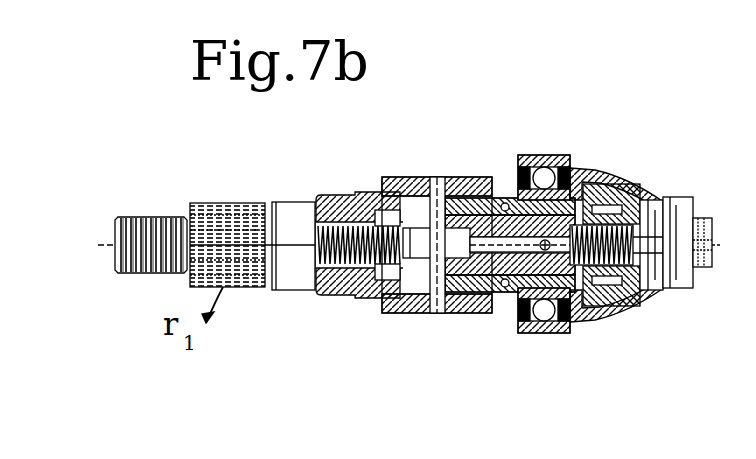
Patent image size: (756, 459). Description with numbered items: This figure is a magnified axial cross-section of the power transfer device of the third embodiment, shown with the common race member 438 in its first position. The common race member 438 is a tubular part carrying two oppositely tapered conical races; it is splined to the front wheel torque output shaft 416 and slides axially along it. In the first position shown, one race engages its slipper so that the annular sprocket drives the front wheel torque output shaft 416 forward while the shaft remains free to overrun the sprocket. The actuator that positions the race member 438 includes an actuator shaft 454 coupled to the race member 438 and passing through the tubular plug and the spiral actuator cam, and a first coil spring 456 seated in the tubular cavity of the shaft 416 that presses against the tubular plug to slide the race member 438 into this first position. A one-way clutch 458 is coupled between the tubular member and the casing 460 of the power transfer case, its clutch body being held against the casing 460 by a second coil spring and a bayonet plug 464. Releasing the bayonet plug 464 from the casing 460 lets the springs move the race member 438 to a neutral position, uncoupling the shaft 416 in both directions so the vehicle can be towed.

The front wheel torque output shaft 416 is at (152, 228).
The common race member 438 is at (408, 315).
The actuator shaft 454 is at (428, 177).
The first coil spring 456 is at (347, 205).
The one-way clutch 458 is at (622, 310).
The casing 460 is at (618, 173).
The bayonet plug 464 is at (692, 222).